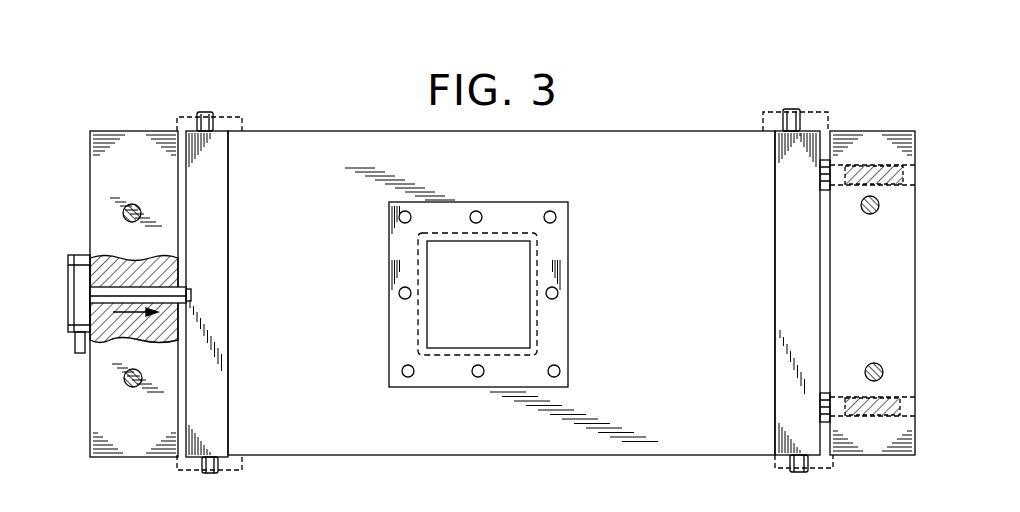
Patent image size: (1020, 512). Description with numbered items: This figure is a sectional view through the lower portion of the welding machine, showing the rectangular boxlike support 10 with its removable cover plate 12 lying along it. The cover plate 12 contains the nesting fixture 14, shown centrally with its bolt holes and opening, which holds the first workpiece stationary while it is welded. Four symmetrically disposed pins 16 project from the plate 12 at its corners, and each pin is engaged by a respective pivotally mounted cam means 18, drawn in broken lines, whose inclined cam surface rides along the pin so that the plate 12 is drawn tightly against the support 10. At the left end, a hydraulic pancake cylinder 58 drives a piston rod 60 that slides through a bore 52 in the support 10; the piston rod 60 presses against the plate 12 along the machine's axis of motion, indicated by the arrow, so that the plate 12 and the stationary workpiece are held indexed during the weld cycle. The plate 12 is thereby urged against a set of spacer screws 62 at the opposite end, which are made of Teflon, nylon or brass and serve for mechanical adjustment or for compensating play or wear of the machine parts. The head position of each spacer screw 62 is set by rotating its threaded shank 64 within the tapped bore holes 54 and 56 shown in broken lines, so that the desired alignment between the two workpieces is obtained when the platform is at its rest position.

The support 10 is at (135, 182).
The cover plate 12 is at (308, 230).
The nesting fixture 14 is at (556, 320).
The pins 16 is at (213, 118).
The cam means 18 is at (177, 117).
The bore 52 is at (113, 262).
The tapped bore hole 54 is at (907, 185).
The tapped bore hole 56 is at (908, 395).
The hydraulic pancake cylinder 58 is at (71, 253).
The piston rod 60 is at (181, 291).
The spacer screws 62 is at (818, 174).
The threaded shanks 64 is at (863, 190).